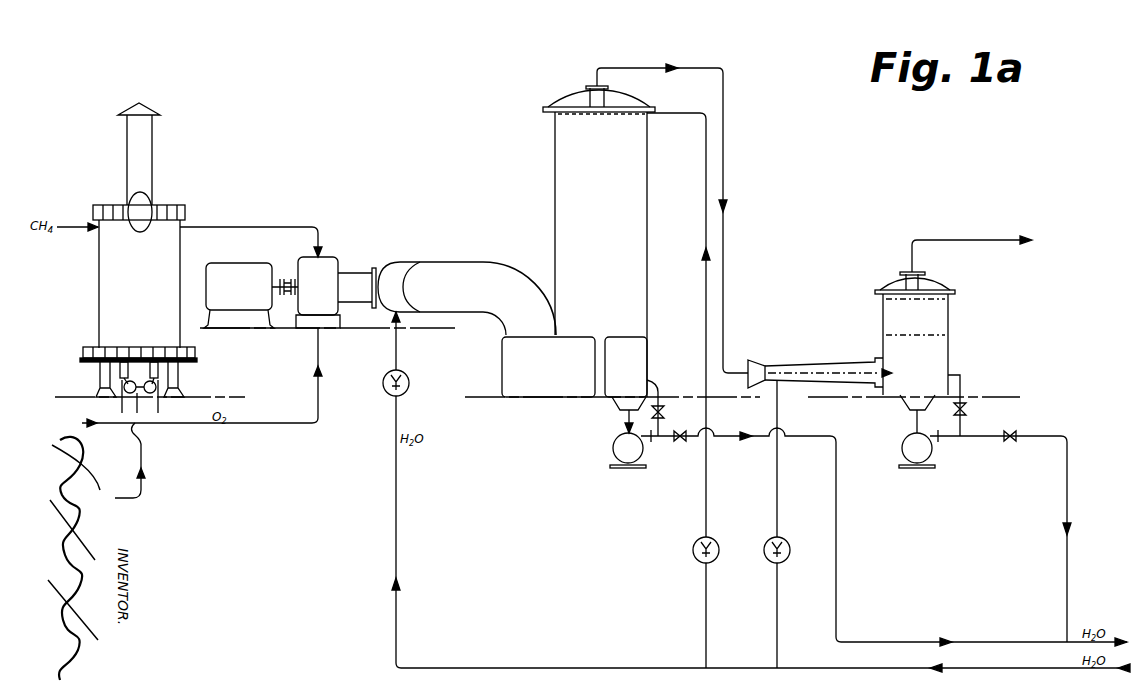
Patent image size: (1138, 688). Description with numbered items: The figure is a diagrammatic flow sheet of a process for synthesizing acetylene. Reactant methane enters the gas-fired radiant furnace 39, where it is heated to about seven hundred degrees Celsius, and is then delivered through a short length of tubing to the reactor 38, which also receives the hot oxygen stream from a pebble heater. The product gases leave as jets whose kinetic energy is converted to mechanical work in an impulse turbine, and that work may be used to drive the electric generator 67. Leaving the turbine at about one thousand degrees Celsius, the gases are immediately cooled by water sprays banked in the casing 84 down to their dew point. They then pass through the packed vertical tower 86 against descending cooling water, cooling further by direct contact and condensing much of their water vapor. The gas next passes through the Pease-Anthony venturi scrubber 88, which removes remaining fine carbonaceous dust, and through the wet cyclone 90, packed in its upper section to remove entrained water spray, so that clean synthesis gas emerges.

The gas-fired radiant furnace 39 is at (167, 199).
The electric generator 67 is at (251, 295).
The reactor 38 is at (318, 292).
The casing 84 is at (492, 329).
The packed vertical tower 86 is at (603, 277).
The Pease-Anthony venturi scrubber 88 is at (852, 383).
The wet cyclone 90 is at (940, 327).